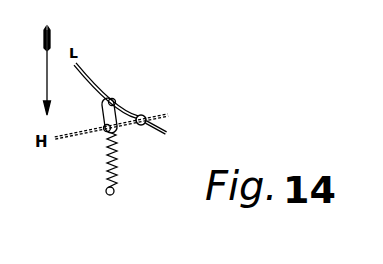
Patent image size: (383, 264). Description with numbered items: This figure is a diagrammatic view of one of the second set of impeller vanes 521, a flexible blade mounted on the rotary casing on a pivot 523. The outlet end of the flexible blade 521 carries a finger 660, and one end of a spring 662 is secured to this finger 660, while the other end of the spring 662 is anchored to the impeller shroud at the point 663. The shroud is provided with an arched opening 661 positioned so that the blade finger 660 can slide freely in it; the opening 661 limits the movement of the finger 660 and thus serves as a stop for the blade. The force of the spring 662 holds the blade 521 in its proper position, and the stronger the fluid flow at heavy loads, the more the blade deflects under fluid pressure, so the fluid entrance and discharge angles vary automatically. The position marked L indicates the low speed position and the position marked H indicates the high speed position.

The impeller vanes 521 is at (92, 79).
The pivot 523 is at (146, 117).
The finger 660 is at (115, 99).
The arched openings 661 is at (103, 108).
The spring 662 is at (118, 157).
The spring anchor 663 is at (114, 192).